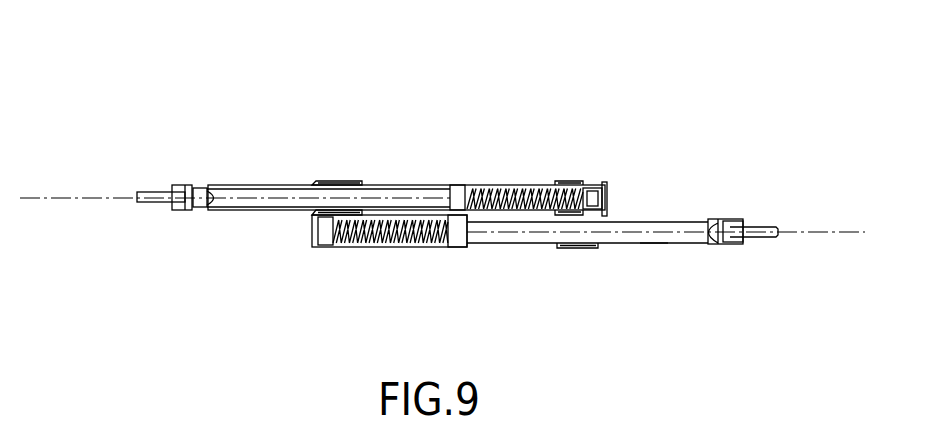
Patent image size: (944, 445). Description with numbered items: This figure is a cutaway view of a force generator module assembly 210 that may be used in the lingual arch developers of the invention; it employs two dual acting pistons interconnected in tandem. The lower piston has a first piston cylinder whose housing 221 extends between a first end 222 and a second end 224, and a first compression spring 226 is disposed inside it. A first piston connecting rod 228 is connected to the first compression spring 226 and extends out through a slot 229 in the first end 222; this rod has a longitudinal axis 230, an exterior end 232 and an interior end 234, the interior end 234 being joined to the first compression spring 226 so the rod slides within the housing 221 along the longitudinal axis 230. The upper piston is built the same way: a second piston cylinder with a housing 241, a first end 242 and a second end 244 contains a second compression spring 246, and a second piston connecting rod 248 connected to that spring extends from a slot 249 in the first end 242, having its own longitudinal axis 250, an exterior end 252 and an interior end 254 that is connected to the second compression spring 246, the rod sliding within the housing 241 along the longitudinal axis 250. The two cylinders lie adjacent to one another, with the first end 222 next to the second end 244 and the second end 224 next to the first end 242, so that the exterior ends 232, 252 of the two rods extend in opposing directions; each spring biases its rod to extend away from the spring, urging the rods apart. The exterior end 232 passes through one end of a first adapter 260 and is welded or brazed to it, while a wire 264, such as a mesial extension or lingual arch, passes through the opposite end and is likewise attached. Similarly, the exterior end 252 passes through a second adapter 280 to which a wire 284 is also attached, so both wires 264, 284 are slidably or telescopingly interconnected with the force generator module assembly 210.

The force generator module assembly 210 is at (512, 95).
The longitudinal axis 250 is at (58, 192).
The wire 284 is at (155, 203).
The second adapter 280 is at (186, 183).
The exterior end 252 is at (214, 207).
The second piston connecting rod 248 is at (255, 184).
The housing 241 is at (388, 185).
The first end 242 is at (330, 181).
The interior end 254 is at (453, 185).
The second compression spring 246 is at (486, 186).
The second end 244 is at (566, 181).
The slot 229 is at (607, 214).
The slot 249 is at (313, 211).
The second end 224 is at (313, 246).
The first compression spring 226 is at (384, 247).
The interior end 234 is at (465, 247).
The housing 221 is at (506, 244).
The first end 222 is at (603, 248).
The longitudinal axis 230 is at (833, 232).
The first piston connecting rod 228 is at (652, 243).
The exterior end 232 is at (705, 245).
The first adapter 260 is at (724, 219).
The wire 264 is at (764, 238).